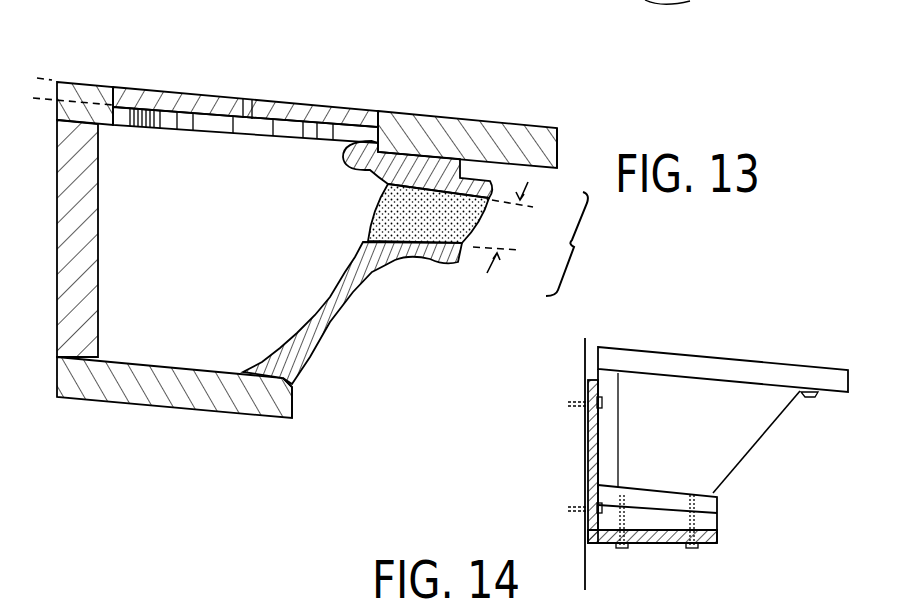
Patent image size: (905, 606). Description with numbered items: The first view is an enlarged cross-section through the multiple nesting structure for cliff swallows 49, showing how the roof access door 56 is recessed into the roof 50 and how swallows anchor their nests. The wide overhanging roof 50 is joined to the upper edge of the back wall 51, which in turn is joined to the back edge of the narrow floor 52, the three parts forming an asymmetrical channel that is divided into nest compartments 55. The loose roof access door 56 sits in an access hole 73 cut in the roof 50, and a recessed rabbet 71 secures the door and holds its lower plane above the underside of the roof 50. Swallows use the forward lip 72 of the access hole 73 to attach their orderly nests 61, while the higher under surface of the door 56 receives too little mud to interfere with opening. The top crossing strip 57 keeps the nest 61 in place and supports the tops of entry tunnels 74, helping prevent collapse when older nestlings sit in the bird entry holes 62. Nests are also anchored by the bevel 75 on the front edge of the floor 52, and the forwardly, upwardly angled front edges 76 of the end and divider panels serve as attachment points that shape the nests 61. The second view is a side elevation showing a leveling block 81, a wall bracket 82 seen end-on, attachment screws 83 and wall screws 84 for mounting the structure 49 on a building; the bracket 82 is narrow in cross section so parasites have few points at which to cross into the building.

In FIG. 14, the multiple nesting structure for cliff swallows 49 is at (852, 352).
In FIG. 13, the wide overhanging roof 50 is at (507, 140).
In FIG. 13, the back wall 51 is at (77, 200).
In FIG. 13, the narrow floor 52 is at (120, 380).
In FIG. 13, the nest compartment 55 is at (165, 277).
In FIG. 13, the roof access door 56 is at (197, 97).
In FIG. 13, the top crossing strip 57 is at (487, 170).
In FIG. 13, the orderly nest 61 is at (371, 255).
In FIG. 13, the bird entry hole 62 is at (515, 227).
In FIG. 13, the recessed rabbet 71 is at (42, 85).
In FIG. 13, the forward lip 72 is at (370, 142).
In FIG. 13, the access hole 73 is at (359, 172).
In FIG. 13, the entry tunnel 74 is at (578, 244).
In FIG. 13, the bevel 75 is at (282, 413).
In FIG. 13, the forwardly, upwardly angled front edge 76 is at (323, 342).
In FIG. 14, the leveling block 81 is at (713, 507).
In FIG. 14, the wall bracket 82 is at (716, 532).
In FIG. 14, the attachment screws 83 is at (692, 550).
In FIG. 14, the wall screws 84 is at (570, 404).